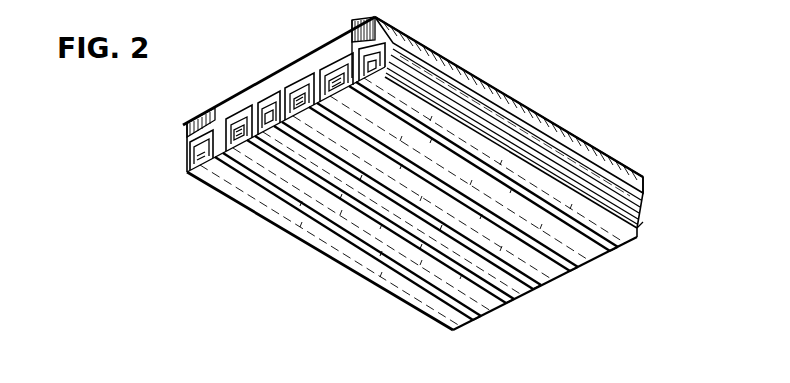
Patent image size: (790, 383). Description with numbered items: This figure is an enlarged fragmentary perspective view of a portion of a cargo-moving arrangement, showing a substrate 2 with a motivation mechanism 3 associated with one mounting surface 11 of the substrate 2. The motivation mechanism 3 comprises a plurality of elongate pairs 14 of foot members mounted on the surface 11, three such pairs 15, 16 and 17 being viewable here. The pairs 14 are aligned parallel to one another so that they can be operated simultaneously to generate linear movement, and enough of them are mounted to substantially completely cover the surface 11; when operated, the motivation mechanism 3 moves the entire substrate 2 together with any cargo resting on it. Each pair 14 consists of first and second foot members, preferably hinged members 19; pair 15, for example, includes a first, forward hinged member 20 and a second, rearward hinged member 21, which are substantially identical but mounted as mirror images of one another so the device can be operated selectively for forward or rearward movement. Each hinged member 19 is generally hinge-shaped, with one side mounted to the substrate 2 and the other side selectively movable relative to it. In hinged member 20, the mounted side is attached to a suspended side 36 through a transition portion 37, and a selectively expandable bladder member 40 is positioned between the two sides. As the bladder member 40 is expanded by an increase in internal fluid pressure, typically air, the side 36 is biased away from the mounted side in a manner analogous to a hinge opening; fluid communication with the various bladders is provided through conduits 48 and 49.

The substrate 2 is at (350, 58).
The motivation mechanism 3 is at (284, 0).
The mounting surface 11 is at (243, 102).
The pairs of foot members 14 is at (625, 223).
The pair of foot members 15 is at (592, 254).
The pair of foot members 16 is at (545, 268).
The pair of foot members 17 is at (484, 304).
The hinged member 19 is at (200, 186).
The first hinged member 20 is at (533, 178).
The second hinged member 21 is at (516, 201).
The side 36 is at (386, 40).
The transition portion 37 is at (355, 62).
The bladder member 40 is at (478, 110).
The conduit 48 is at (420, 45).
The conduit 49 is at (447, 70).